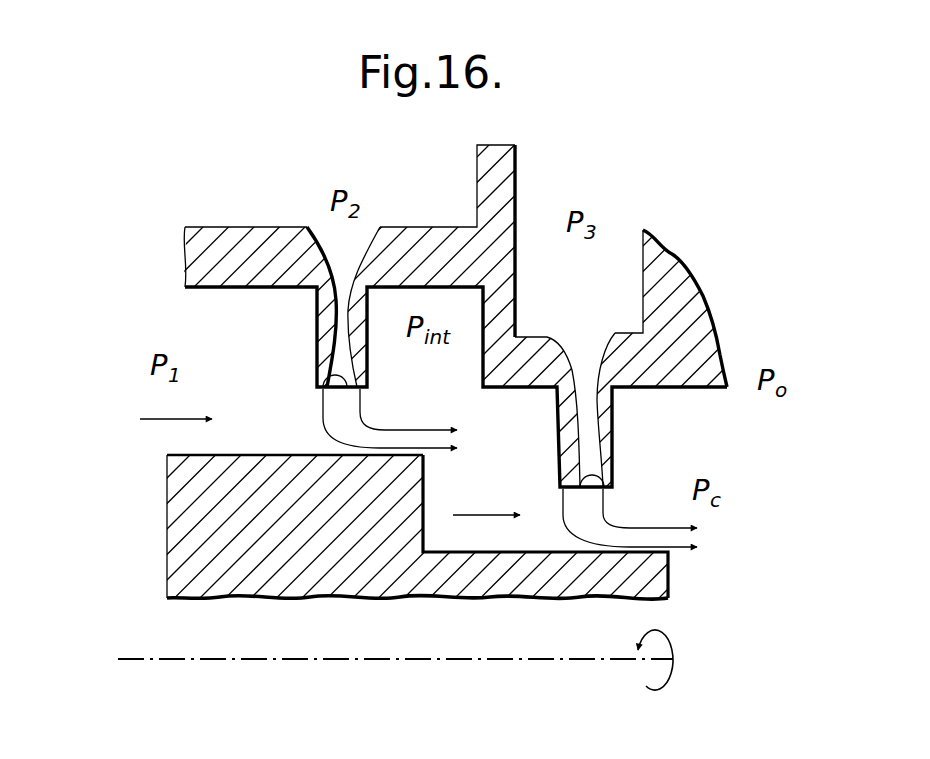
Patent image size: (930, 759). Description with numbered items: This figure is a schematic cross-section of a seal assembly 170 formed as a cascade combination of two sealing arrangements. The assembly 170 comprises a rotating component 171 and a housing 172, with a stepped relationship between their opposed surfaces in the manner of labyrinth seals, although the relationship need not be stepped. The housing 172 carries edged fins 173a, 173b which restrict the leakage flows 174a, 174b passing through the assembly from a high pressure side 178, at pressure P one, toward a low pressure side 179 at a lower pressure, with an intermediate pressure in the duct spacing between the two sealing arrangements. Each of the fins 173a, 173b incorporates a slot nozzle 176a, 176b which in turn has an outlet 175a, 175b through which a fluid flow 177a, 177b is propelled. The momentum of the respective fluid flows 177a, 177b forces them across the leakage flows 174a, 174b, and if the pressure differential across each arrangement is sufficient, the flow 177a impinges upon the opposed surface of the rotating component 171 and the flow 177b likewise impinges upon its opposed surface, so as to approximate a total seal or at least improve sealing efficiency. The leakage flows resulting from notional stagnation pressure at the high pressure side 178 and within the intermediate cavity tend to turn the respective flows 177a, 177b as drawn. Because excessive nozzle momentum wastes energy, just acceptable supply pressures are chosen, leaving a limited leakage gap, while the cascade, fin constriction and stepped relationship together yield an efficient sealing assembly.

The seal assembly 170 is at (668, 234).
The rotating component 171 is at (207, 555).
The housing 172 is at (697, 307).
The edged fin 173a is at (323, 328).
The edged fin 173b is at (613, 420).
The leakage flow 174a is at (162, 425).
The leakage flow 174b is at (482, 513).
The outlet 175a is at (320, 378).
The outlet 175b is at (606, 448).
The slot nozzle 176a is at (338, 240).
The slot nozzle 176b is at (581, 372).
The fluid flow 177a is at (403, 438).
The fluid flow 177b is at (678, 545).
The high pressure side 178 is at (203, 327).
The low pressure side 179 is at (788, 449).